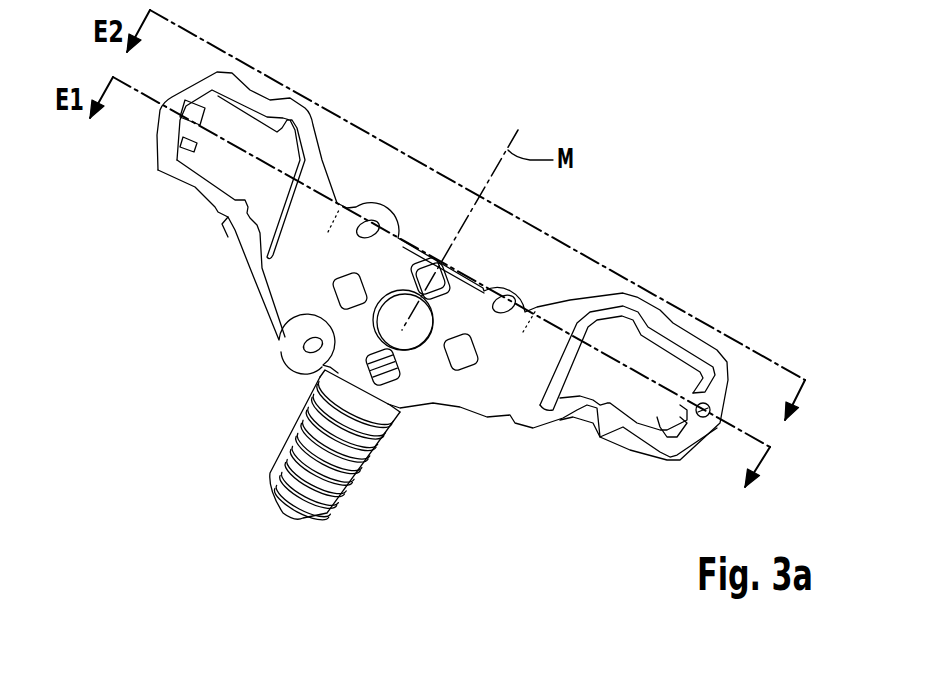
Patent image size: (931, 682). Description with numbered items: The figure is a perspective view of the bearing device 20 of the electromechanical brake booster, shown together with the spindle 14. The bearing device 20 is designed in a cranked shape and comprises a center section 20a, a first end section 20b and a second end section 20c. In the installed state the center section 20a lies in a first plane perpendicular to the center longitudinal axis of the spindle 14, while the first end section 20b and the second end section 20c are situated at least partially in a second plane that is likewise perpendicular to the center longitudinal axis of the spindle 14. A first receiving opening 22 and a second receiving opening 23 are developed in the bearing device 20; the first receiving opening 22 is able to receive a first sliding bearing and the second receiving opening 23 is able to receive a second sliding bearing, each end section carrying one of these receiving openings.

The spindle 14 is at (255, 457).
The bearing device 20 is at (437, 432).
The center section 20a is at (300, 318).
The first end section 20b is at (238, 217).
The second end section 20c is at (588, 417).
The first receiving opening 22 is at (202, 163).
The second receiving opening 23 is at (667, 423).